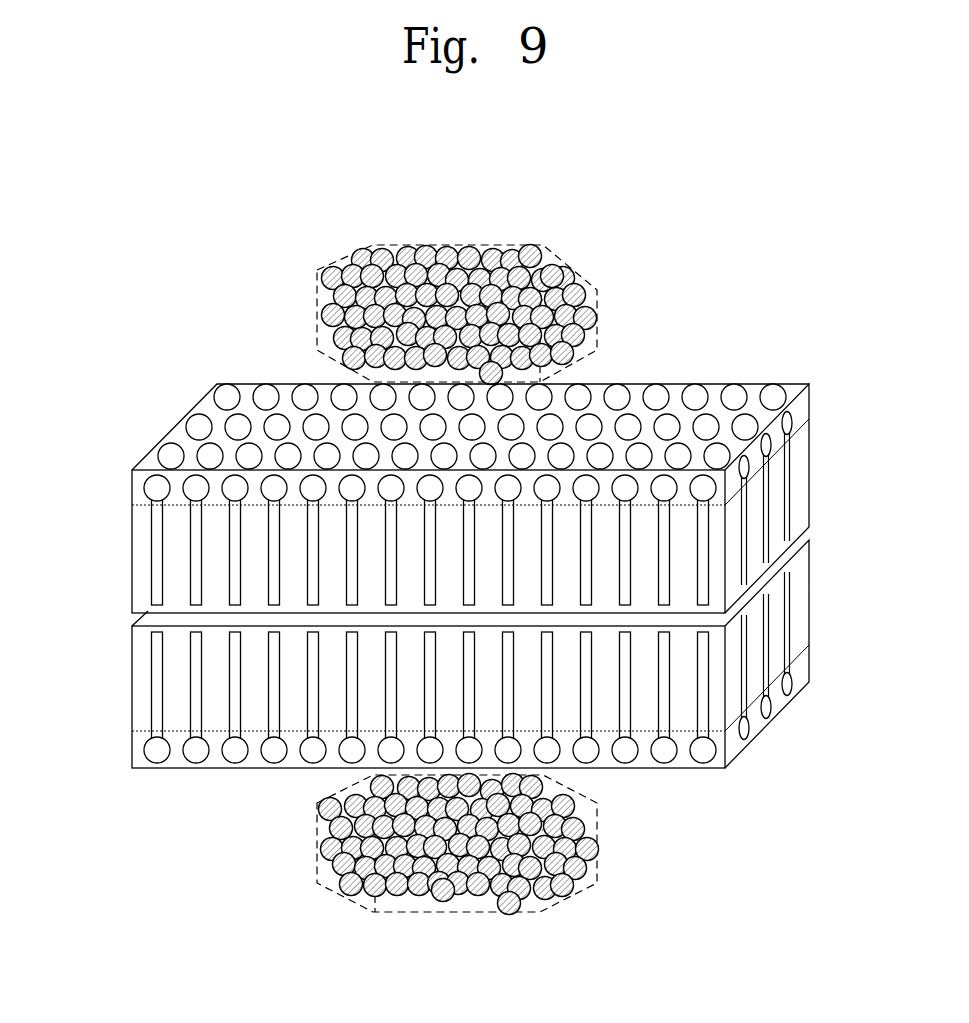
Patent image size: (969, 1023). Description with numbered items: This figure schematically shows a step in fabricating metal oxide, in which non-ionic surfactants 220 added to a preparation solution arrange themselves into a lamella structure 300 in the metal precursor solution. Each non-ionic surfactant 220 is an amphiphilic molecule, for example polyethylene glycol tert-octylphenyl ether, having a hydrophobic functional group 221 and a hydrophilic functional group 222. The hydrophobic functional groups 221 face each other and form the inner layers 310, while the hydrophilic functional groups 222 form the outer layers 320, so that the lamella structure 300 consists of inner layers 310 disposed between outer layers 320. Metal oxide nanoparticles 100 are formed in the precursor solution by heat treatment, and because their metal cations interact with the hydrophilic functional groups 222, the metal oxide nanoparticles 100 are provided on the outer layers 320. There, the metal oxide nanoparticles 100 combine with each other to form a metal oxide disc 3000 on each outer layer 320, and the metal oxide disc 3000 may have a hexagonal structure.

The metal oxide nanoparticle 100 is at (553, 270).
The metal oxide disc 3000 is at (317, 297).
The lamella structure 300 is at (871, 387).
The inner layer 310 is at (815, 427).
The outer layer 320 is at (815, 384).
The non-ionic surfactant 220 is at (67, 478).
The hydrophobic functional group 221 is at (157, 564).
The hydrophilic functional group 222 is at (153, 489).